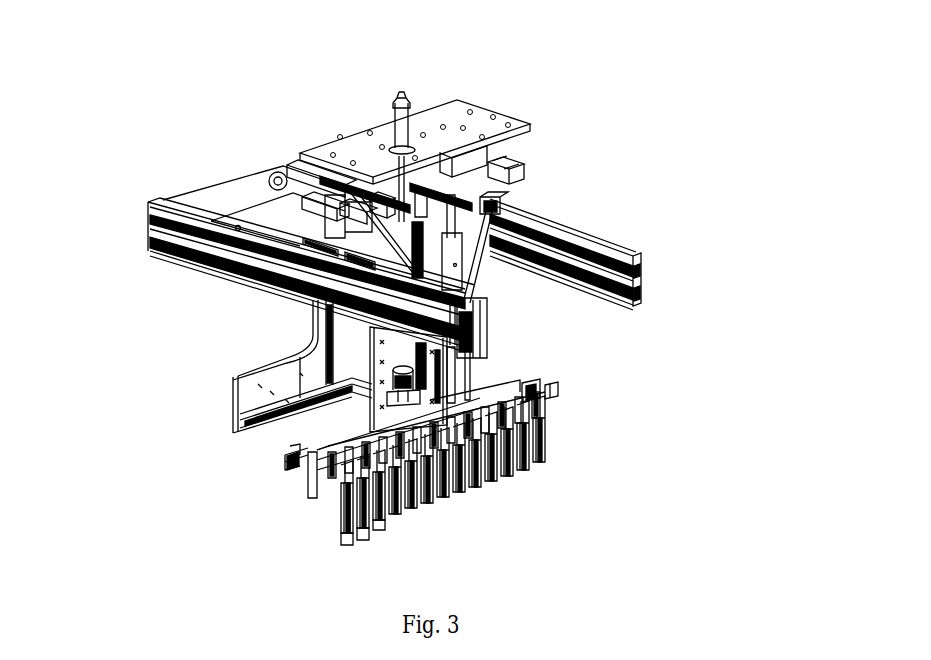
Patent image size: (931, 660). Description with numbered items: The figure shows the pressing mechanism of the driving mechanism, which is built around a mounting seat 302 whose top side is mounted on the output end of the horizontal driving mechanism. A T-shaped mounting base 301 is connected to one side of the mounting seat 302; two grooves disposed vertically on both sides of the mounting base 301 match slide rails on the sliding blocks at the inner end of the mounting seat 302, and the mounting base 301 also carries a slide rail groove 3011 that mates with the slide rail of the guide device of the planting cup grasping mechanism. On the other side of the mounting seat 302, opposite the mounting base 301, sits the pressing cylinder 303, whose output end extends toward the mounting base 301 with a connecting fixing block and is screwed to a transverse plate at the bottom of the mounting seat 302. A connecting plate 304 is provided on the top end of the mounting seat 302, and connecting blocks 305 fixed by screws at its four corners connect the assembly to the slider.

The mounting base 301 is at (297, 388).
The slide rail groove 3011 is at (290, 412).
The mounting seat 302 is at (553, 223).
The pressing cylinder 303 is at (375, 222).
The connecting plate 304 is at (458, 107).
The connecting blocks 305 is at (527, 166).